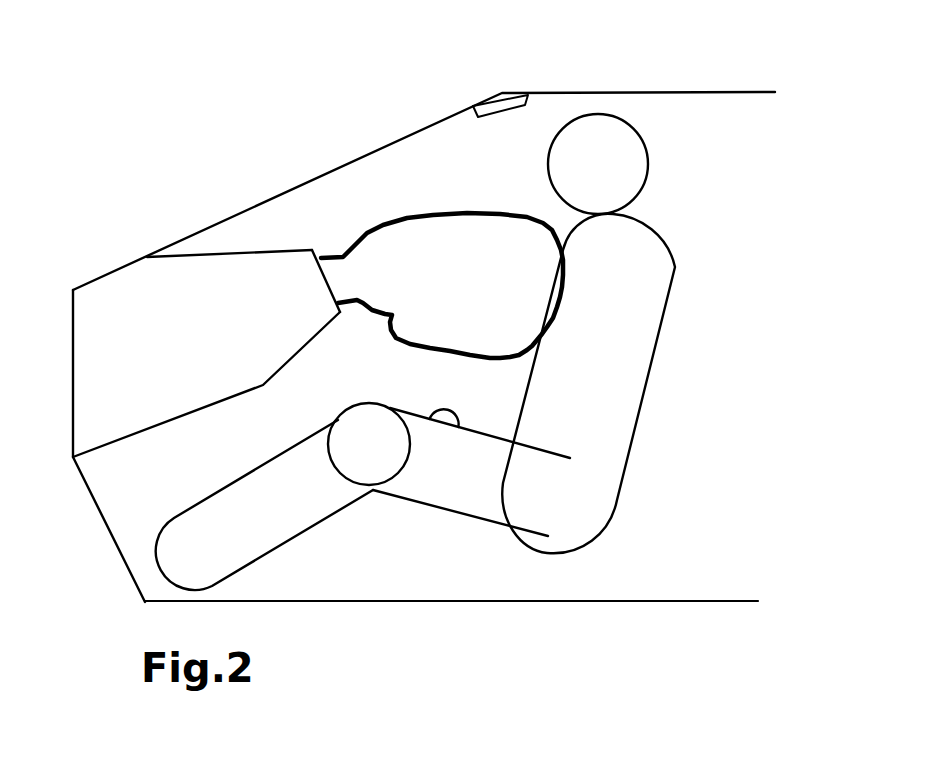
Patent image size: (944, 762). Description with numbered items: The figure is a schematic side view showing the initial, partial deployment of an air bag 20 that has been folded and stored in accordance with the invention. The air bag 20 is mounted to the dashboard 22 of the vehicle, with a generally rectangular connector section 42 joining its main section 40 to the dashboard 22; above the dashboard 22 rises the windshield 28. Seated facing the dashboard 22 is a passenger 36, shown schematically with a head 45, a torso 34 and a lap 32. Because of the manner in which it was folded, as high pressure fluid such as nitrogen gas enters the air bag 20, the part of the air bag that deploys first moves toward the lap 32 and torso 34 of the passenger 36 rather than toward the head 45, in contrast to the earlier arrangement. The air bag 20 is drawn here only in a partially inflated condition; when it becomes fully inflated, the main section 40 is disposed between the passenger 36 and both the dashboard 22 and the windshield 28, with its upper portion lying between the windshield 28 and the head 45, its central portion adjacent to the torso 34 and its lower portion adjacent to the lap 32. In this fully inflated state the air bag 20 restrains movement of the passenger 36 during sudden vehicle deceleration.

The air bag 20 is at (407, 187).
The dashboard 22 is at (305, 273).
The windshield 28 is at (365, 157).
The lap 32 is at (461, 425).
The torso 34 is at (540, 337).
The passenger 36 is at (672, 245).
The main section 40 is at (512, 217).
The connector section 42 is at (335, 270).
The head 45 is at (617, 163).